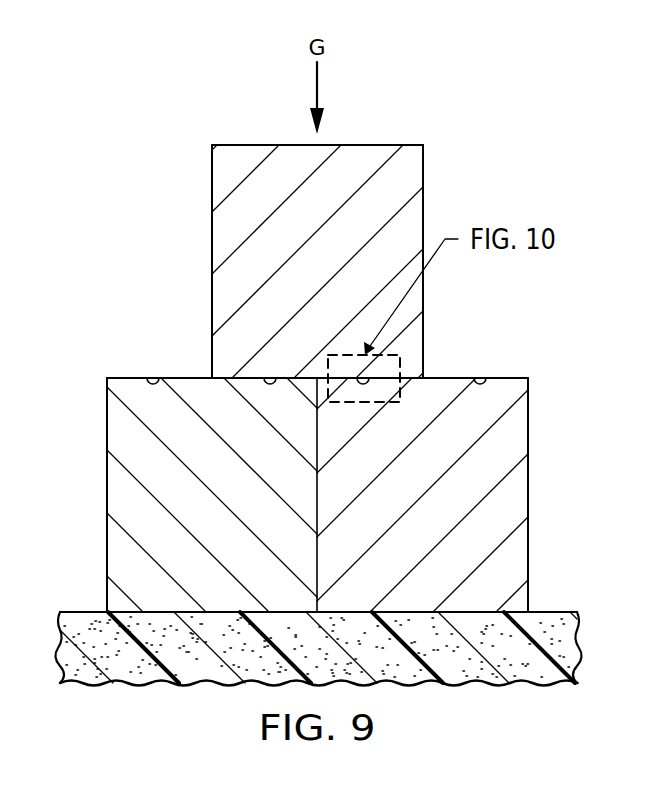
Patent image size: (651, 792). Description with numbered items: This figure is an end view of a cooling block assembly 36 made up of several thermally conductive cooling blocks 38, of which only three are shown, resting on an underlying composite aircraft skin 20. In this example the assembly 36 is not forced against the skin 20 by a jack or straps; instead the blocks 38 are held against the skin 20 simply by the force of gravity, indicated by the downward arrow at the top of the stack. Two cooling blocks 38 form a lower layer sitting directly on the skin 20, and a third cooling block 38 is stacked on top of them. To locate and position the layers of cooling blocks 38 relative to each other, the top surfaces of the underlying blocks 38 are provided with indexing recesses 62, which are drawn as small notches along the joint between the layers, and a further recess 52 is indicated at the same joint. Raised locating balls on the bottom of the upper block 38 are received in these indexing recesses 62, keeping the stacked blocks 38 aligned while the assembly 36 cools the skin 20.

The cooling block assembly 36 is at (175, 116).
The cooling block 38 is at (302, 276).
The notch / groove 52 is at (269, 366).
The indexing recess 62 is at (153, 366).
The composite aircraft skin 20 is at (84, 622).